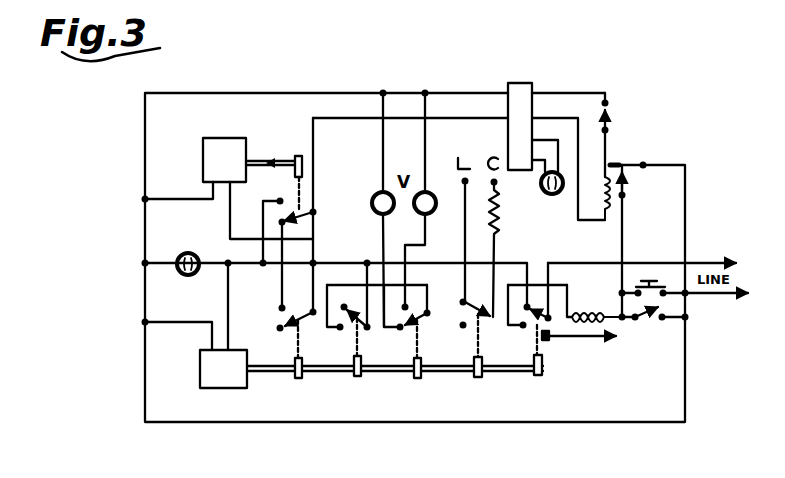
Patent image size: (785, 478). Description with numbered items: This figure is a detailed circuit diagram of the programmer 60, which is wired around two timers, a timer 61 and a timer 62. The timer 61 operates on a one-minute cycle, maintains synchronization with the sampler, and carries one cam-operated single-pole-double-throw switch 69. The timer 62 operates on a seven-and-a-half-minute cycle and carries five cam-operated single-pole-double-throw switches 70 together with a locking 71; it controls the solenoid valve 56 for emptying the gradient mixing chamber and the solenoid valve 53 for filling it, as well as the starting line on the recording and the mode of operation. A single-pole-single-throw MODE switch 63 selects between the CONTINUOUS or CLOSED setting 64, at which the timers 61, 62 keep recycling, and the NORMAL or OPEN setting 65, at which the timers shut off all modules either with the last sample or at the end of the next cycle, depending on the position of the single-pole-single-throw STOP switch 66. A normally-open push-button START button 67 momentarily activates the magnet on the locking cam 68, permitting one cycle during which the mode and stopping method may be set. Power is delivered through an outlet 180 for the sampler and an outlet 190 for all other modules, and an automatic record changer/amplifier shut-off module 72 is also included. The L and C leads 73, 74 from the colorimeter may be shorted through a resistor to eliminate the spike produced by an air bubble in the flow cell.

The programmer 60 is at (318, 82).
The timer 61 is at (232, 138).
The timer 62 is at (200, 373).
The MODE switch 63 is at (649, 321).
The CONTINUOUS or CLOSED setting 64 is at (670, 312).
The NORMAL or OPEN setting 65 is at (668, 302).
The STOP switch 66 is at (611, 122).
The START button 67 is at (652, 280).
The locking cam 68 is at (550, 343).
The cam-operated single-pole-double-throw switch 69 is at (296, 217).
The cam-operated single-pole-double-throw switches 70 is at (304, 320).
The locking 71 is at (299, 378).
The automatic record changer/amplifier shut-off module 72 is at (524, 83).
The L lead 73 is at (458, 158).
The C lead 74 is at (491, 157).
The valve 56 is at (374, 194).
The valve 53 is at (438, 207).
The outlet 180 is at (556, 195).
The outlet 190 is at (189, 252).